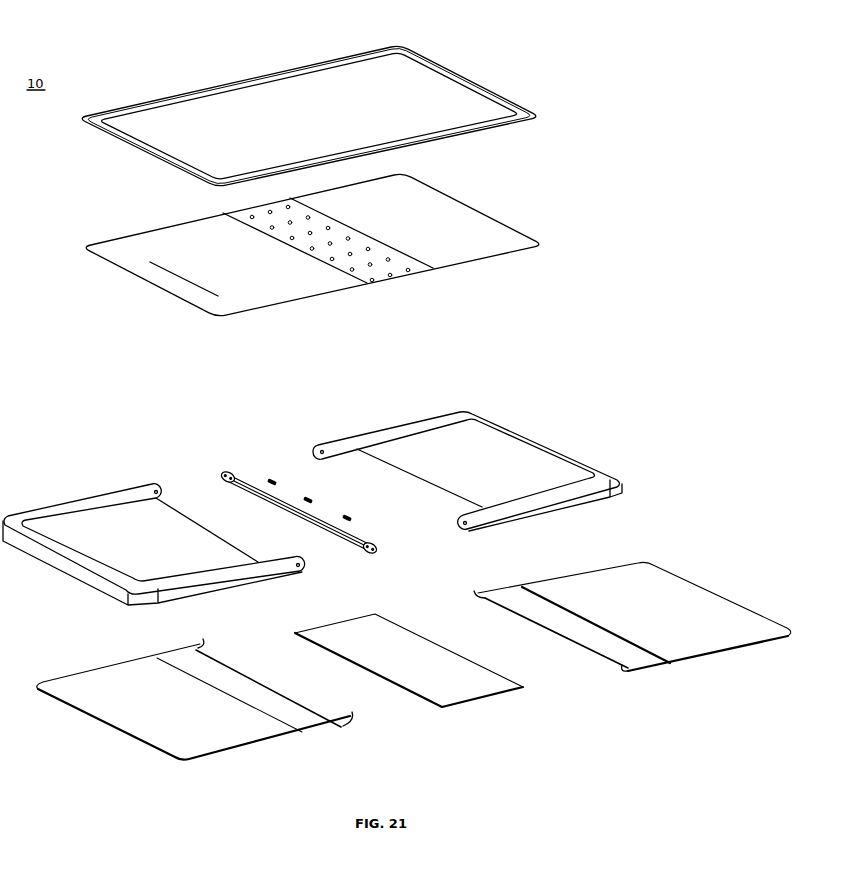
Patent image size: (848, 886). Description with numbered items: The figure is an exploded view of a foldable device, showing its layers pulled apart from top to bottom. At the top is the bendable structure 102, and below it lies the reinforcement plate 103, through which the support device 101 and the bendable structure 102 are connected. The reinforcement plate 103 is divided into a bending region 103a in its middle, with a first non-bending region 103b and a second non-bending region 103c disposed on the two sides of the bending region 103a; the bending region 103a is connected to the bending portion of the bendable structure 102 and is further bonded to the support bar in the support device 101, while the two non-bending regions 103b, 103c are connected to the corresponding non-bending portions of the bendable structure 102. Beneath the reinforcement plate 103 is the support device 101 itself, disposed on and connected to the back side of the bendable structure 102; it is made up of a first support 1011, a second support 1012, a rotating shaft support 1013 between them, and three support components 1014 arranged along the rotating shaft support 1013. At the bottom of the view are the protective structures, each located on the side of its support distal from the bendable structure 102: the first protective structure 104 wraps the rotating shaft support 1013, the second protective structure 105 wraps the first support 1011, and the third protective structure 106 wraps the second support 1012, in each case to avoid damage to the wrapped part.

The support device 101 is at (422, 345).
The first support 1011 is at (113, 535).
The second support 1012 is at (448, 455).
The rotating shaft support 1013 is at (225, 472).
The support component 1014 is at (275, 480).
The bendable structure 102 is at (420, 80).
The reinforcement plate 103 is at (344, 234).
The bending region 103a is at (362, 247).
The first non-bending region 103b is at (305, 288).
The second non-bending region 103c is at (378, 213).
The first protective structure 104 is at (450, 672).
The second protective structure 105 is at (220, 722).
The third protective structure 106 is at (677, 635).